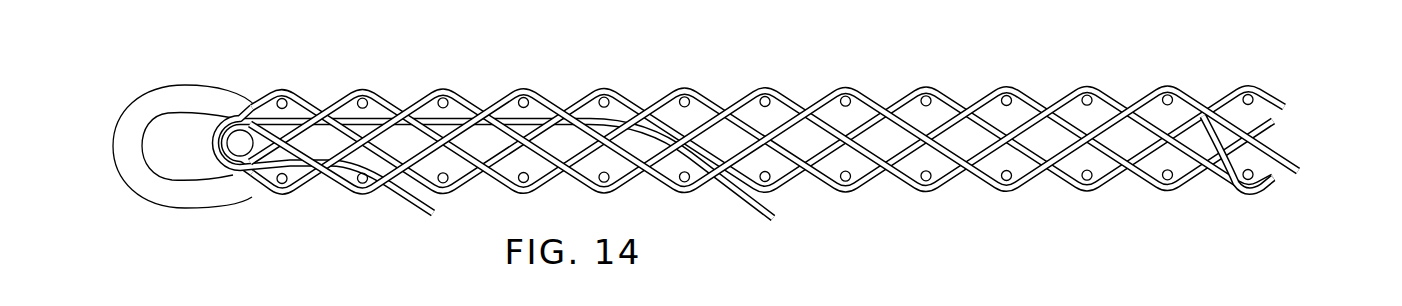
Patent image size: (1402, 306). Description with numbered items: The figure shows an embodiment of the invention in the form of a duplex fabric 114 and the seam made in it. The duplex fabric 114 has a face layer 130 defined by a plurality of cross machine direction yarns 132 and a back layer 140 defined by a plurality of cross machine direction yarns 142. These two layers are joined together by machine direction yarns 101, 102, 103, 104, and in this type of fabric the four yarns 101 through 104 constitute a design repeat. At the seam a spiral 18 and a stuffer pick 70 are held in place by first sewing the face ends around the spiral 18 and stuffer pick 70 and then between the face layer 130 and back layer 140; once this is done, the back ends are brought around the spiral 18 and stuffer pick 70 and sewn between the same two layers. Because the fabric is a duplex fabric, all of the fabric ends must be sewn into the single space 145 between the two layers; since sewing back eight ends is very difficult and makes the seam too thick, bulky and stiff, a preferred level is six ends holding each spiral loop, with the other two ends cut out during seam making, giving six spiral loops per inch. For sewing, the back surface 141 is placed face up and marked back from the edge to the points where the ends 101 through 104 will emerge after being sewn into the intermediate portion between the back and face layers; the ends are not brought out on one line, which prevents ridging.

The spiral 18 is at (197, 92).
The stuffer pick 70 is at (241, 150).
The machine direction yarn 101 is at (803, 116).
The machine direction yarn 102 is at (1240, 184).
The machine direction yarn 103 is at (1236, 179).
The machine direction yarn 104 is at (1220, 178).
The duplex fabric 114 is at (787, 140).
The face layer 130 is at (1300, 100).
The cross machine direction yarn 132 is at (284, 99).
The back layer 140 is at (1307, 168).
The back surface 141 is at (787, 169).
The cross machine direction yarn 142 is at (1088, 180).
The single space 145 is at (1293, 133).